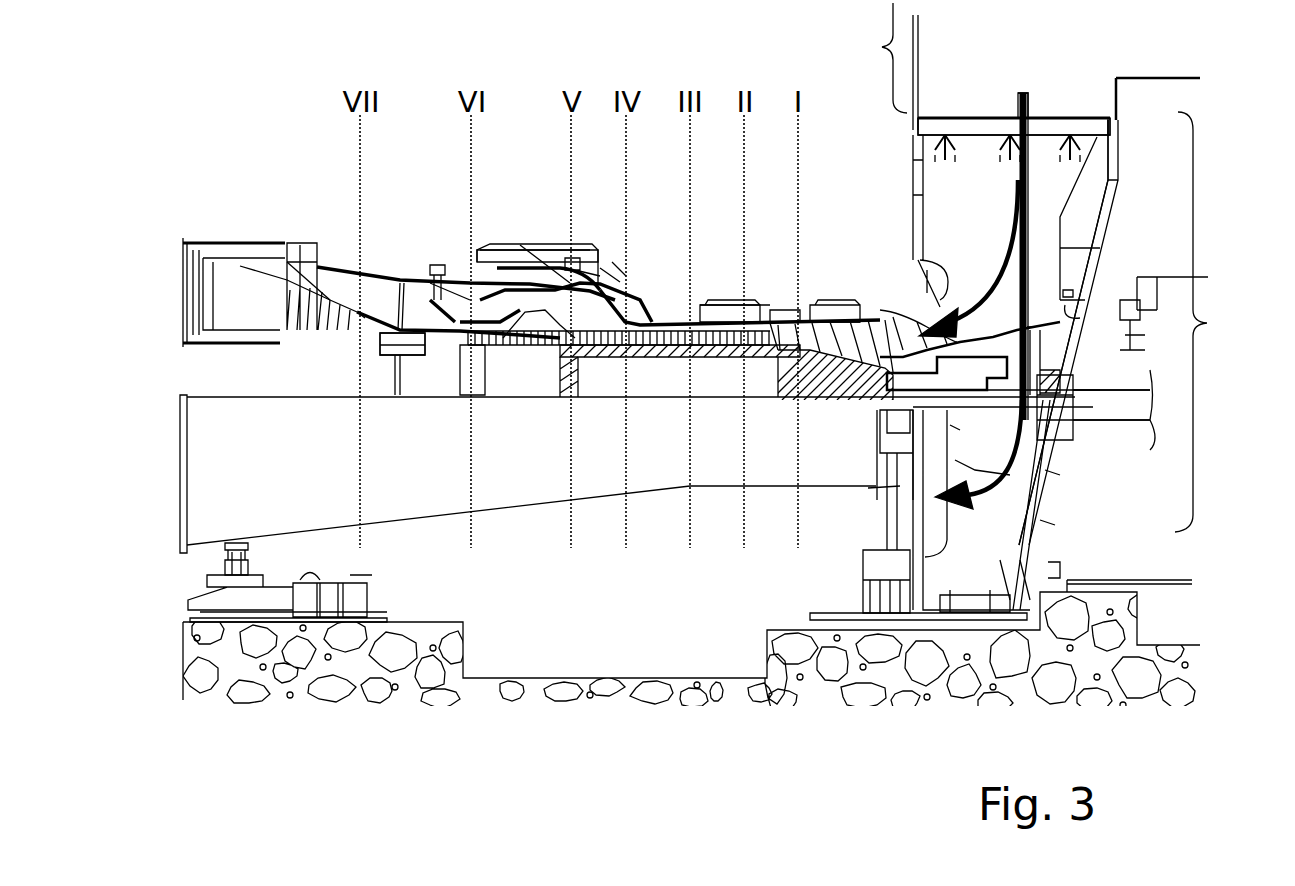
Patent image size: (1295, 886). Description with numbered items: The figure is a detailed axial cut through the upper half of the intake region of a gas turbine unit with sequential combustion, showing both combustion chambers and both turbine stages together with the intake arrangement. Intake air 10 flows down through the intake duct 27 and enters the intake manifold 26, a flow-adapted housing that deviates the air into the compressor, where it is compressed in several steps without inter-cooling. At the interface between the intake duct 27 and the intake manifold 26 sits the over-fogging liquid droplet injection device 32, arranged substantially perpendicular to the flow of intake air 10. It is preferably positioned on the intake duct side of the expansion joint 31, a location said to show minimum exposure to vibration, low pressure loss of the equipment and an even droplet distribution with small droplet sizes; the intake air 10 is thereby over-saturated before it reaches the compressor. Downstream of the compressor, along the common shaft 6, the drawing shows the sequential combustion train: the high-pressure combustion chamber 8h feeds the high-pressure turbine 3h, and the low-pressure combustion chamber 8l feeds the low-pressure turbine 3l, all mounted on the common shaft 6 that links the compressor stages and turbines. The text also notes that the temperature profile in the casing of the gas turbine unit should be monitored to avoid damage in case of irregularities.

The intake duct 27 is at (878, 66).
The expansion joint 31 is at (915, 118).
The intake air 10 is at (1028, 98).
The over-fogging liquid droplet injection device 32 is at (1112, 123).
The intake manifold 26 is at (1214, 322).
The common shaft 6 is at (1140, 412).
The low-pressure turbine 3l is at (327, 262).
The low-pressure combustion chamber 8l is at (400, 280).
The high-pressure turbine 3h is at (450, 250).
The high-pressure combustion chamber 8h is at (517, 247).